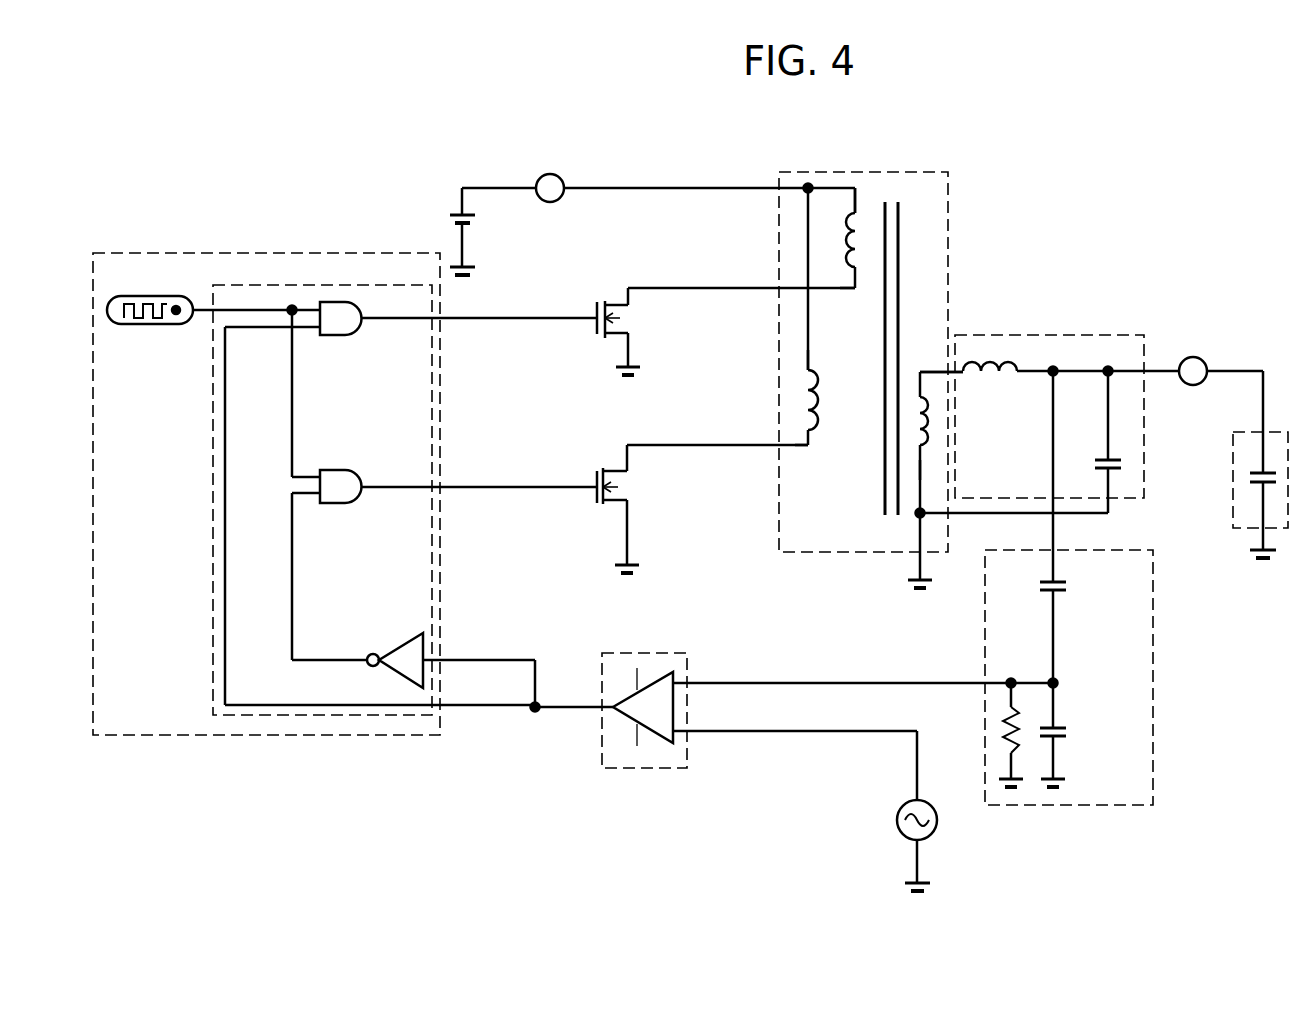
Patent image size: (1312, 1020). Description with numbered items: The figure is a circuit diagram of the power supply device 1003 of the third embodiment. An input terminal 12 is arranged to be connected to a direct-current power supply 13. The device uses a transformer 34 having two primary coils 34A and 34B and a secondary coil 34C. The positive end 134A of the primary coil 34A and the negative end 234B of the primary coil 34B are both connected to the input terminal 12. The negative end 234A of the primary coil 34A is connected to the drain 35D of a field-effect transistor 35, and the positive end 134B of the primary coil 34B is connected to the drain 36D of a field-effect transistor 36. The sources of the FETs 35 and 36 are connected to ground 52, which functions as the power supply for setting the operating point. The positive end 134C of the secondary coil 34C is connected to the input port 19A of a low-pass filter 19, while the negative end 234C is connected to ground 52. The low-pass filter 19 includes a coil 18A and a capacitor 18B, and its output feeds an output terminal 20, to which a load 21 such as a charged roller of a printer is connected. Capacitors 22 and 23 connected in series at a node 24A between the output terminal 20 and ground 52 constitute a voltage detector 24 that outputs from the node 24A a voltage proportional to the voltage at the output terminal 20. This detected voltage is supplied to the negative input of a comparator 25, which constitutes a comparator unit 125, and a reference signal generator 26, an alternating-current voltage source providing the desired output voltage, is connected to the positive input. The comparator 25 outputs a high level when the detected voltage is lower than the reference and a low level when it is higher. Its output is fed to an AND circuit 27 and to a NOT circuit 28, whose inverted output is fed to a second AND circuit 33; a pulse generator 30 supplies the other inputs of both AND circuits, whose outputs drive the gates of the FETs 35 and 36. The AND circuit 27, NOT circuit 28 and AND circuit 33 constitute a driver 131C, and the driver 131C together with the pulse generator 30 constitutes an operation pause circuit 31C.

The direct-current power supply 13 is at (450, 210).
The input terminal 12 is at (550, 203).
The pulse generator 30 is at (148, 330).
The operation pause circuit 31C is at (282, 255).
The driver 131C is at (212, 512).
The AND circuit 27 is at (342, 340).
The AND circuit 33 is at (342, 468).
The NOT circuit 28 is at (402, 643).
The field-effect transistor 35 is at (643, 318).
The drain of FET 35 35D is at (630, 288).
The field-effect transistor 36 is at (640, 488).
The drain of FET 36 36D is at (628, 445).
The ground 52 is at (618, 370).
The transformer 34 is at (888, 170).
The primary coil 34A is at (840, 235).
The positive end of primary coil 34A 134A is at (855, 185).
The negative end of primary coil 34A 234A is at (852, 290).
The primary coil 34B is at (800, 405).
The positive end of primary coil 34B 134B is at (805, 448).
The negative end of primary coil 34B 234B is at (800, 358).
The secondary coil 34C is at (940, 423).
The positive end of secondary coil 34C 134C is at (928, 367).
The negative end of secondary coil 34C 234C is at (920, 468).
The low-pass filter 19 is at (1072, 335).
The input port of low-pass filter 19A is at (952, 362).
The coil 18A is at (987, 357).
The capacitor 18B is at (1124, 463).
The output terminal 20 is at (1193, 356).
The power supply device 1003 is at (1187, 278).
The load 21 is at (1283, 430).
The voltage detector 24 is at (1155, 665).
The node 24A is at (1047, 678).
The capacitor 22 is at (1070, 587).
The capacitor 23 is at (1070, 733).
The comparator 25 is at (665, 673).
The comparator unit 125 is at (618, 768).
The reference signal generator 26 is at (896, 820).